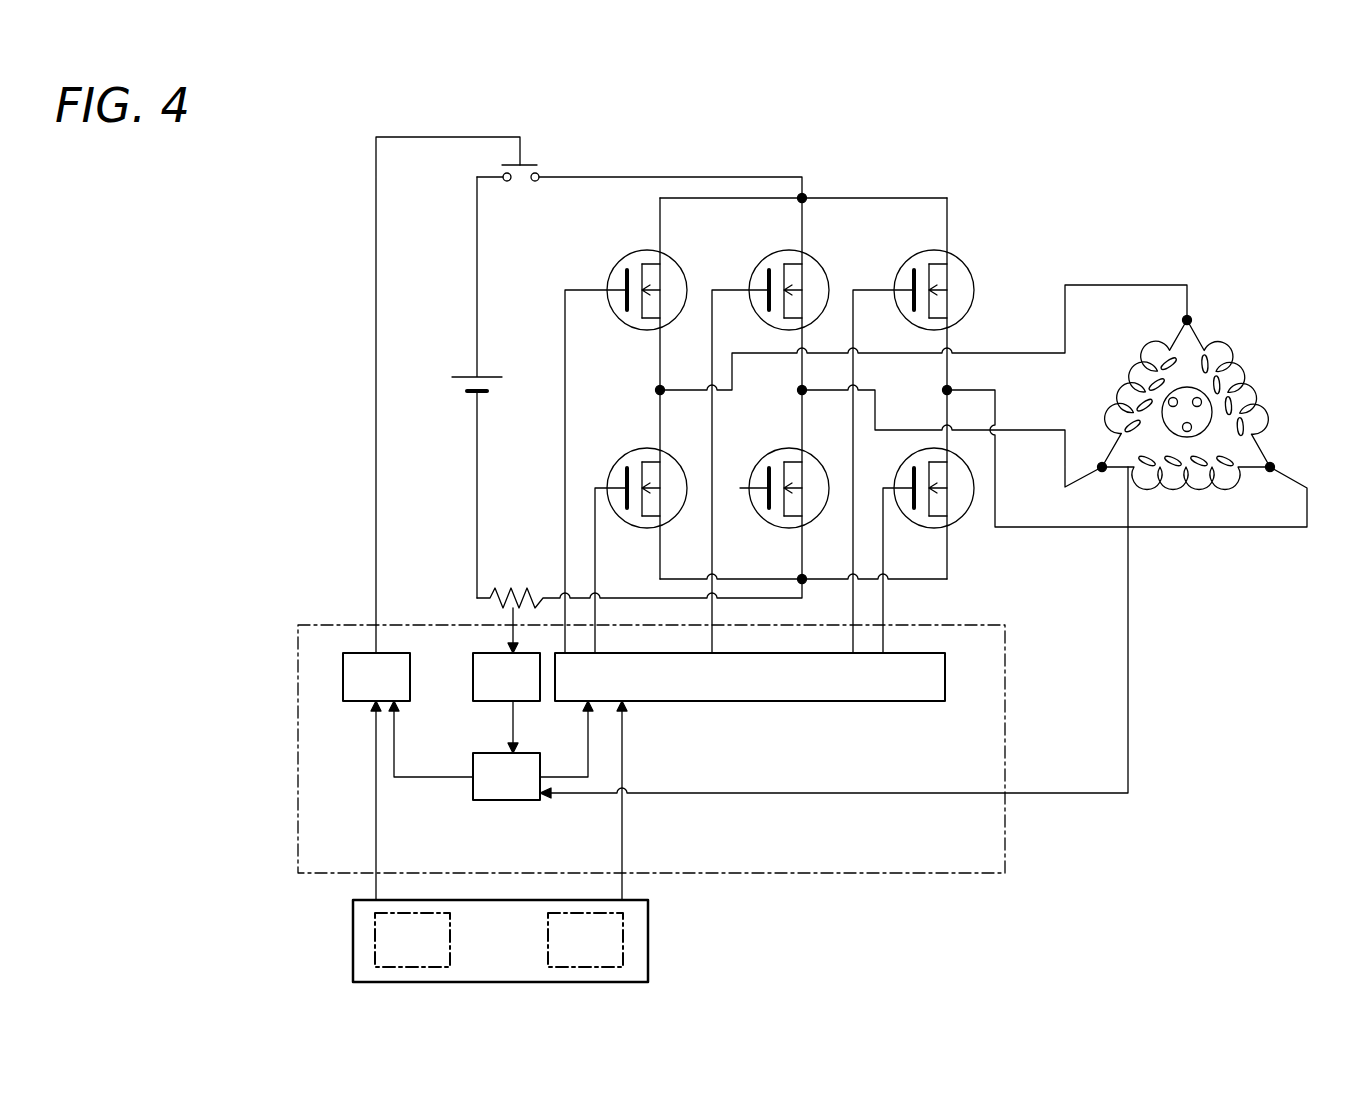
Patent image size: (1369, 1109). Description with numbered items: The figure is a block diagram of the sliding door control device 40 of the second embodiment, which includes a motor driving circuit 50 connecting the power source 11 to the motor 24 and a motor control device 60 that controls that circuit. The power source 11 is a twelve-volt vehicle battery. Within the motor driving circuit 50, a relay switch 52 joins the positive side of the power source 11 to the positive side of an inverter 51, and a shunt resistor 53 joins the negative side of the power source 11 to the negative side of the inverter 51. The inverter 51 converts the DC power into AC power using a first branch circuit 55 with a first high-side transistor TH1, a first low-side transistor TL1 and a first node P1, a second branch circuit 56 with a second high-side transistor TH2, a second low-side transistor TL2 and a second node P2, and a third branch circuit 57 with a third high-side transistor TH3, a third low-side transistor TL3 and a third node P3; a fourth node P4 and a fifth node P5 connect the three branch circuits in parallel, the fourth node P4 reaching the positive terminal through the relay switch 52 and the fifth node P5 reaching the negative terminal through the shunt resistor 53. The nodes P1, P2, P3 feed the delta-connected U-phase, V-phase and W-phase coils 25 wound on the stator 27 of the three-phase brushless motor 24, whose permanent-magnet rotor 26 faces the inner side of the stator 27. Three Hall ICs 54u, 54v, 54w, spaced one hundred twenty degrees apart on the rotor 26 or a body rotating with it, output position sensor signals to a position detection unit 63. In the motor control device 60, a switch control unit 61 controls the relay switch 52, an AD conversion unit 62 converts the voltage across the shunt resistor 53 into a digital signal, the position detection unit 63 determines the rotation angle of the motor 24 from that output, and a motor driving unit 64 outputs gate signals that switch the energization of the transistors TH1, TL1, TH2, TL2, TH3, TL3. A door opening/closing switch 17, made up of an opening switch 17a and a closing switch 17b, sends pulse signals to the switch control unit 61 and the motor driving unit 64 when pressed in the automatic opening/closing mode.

The power source 11 is at (455, 367).
The door opening/closing switch 17 is at (650, 918).
The opening switch 17a is at (375, 935).
The closing switch 17b is at (623, 935).
The motor 24 is at (1237, 318).
The coils 25 is at (1152, 350).
The rotor 26 is at (1206, 432).
The stator 27 is at (1243, 361).
The sliding door control device 40 is at (967, 138).
The motor driving circuit 50 is at (623, 155).
The inverter 51 is at (978, 210).
The relay switch 52 is at (514, 190).
The shunt resistor 53 is at (518, 586).
The Hall IC 54u is at (1168, 402).
The Hall IC 54v is at (1189, 432).
The Hall IC 54w is at (1198, 398).
The first branch circuit 55 is at (662, 226).
The second branch circuit 56 is at (805, 228).
The third branch circuit 57 is at (949, 230).
The motor control device 60 is at (1005, 665).
The switch control unit 61 is at (349, 702).
The AD conversion unit 62 is at (473, 678).
The position detection unit 63 is at (520, 801).
The motor driving unit 64 is at (903, 703).
The first node P1 is at (656, 389).
The second node P2 is at (798, 389).
The third node P3 is at (944, 389).
The fourth node P4 is at (803, 196).
The fifth node P5 is at (806, 576).
The first high-side transistor TH1 is at (626, 441).
The second high-side transistor TH2 is at (770, 441).
The third high-side transistor TH3 is at (913, 441).
The first low-side transistor TL1 is at (634, 538).
The second low-side transistor TL2 is at (774, 476).
The third low-side transistor TL3 is at (915, 547).